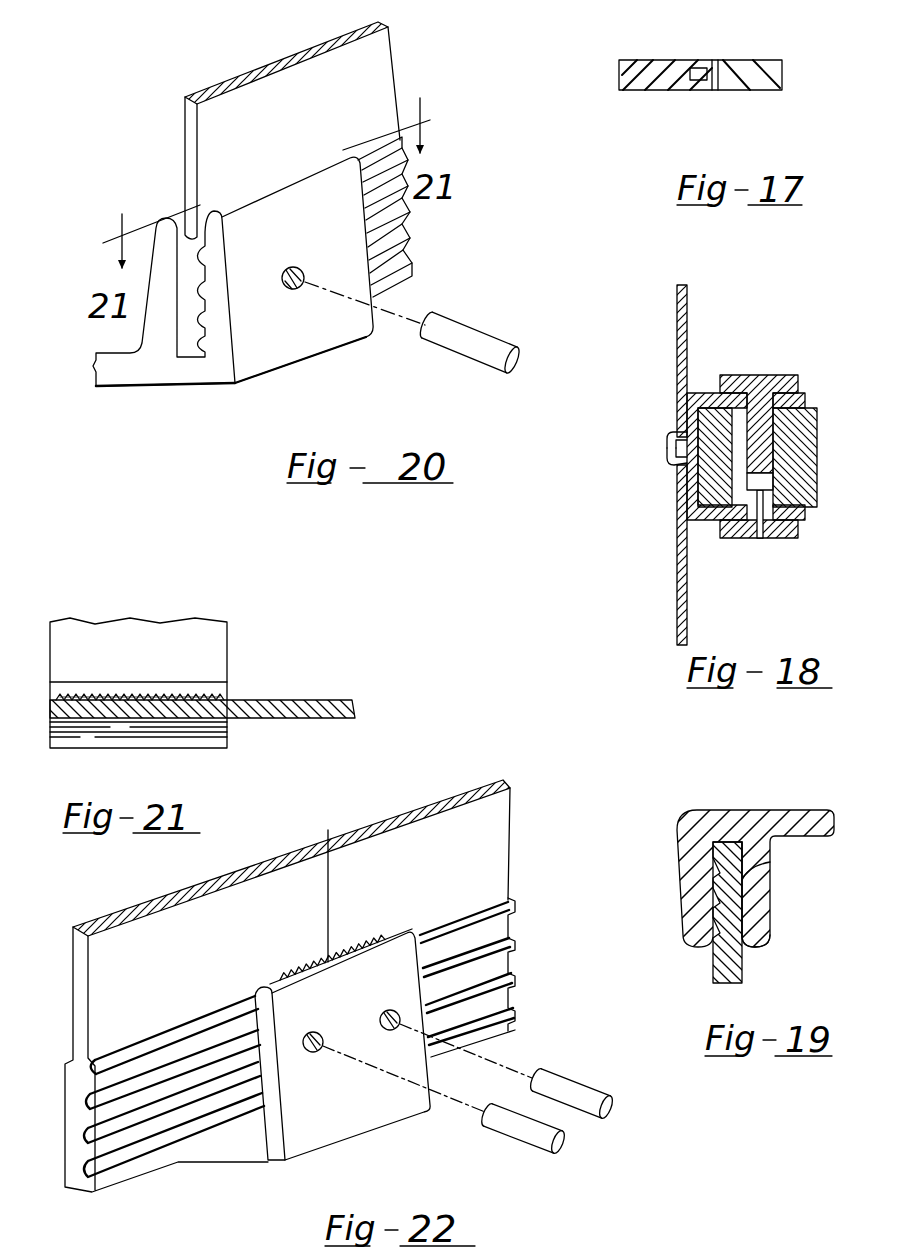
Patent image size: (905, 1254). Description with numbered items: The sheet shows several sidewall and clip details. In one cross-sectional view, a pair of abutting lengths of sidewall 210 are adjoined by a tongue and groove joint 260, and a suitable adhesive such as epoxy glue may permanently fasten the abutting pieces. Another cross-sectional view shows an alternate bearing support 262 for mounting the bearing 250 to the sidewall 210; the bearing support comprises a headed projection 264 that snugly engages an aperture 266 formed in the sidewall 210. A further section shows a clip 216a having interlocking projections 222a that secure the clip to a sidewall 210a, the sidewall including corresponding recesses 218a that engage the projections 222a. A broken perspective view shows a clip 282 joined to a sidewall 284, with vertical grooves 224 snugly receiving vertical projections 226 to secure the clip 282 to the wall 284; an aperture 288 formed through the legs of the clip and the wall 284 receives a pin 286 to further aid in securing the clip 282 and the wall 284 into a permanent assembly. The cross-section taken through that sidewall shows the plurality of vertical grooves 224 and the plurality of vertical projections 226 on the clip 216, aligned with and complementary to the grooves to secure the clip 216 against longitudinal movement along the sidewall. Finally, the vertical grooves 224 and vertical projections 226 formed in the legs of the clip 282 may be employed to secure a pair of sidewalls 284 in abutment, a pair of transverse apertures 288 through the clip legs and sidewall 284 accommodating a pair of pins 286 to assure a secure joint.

In FIG. 17, the tongue and groove joint 260 is at (692, 76).
In FIG. 17, the sidewall 210 is at (665, 90).
In FIG. 18, the sidewall 210 is at (689, 345).
In FIG. 18, the bearing 250 is at (766, 463).
In FIG. 18, the aperture 266 is at (684, 428).
In FIG. 18, the headed projection 264 is at (670, 457).
In FIG. 18, the bearing support 262 is at (718, 522).
In FIG. 19, the clip 216a is at (679, 832).
In FIG. 19, the interlocking projections 222a is at (760, 861).
In FIG. 19, the recesses 218a is at (712, 905).
In FIG. 19, the sidewall 210a is at (730, 945).
In FIG. 20, the sidewall 284 is at (310, 130).
In FIG. 21, the sidewall 284 is at (290, 720).
In FIG. 22, the sidewall 284 is at (182, 969).
In FIG. 20, the clip 282 is at (232, 422).
In FIG. 22, the clip 282 is at (271, 1172).
In FIG. 20, the aperture 288 is at (292, 294).
In FIG. 22, the aperture 288 is at (373, 1029).
In FIG. 20, the pin 286 is at (460, 348).
In FIG. 22, the pin 286 is at (580, 1114).
In FIG. 21, the vertical grooves 224 is at (75, 698).
In FIG. 22, the vertical grooves 224 is at (331, 965).
In FIG. 21, the vertical projections 226 is at (127, 697).
In FIG. 22, the vertical projections 226 is at (322, 958).
In FIG. 21, the clip 216 is at (167, 743).